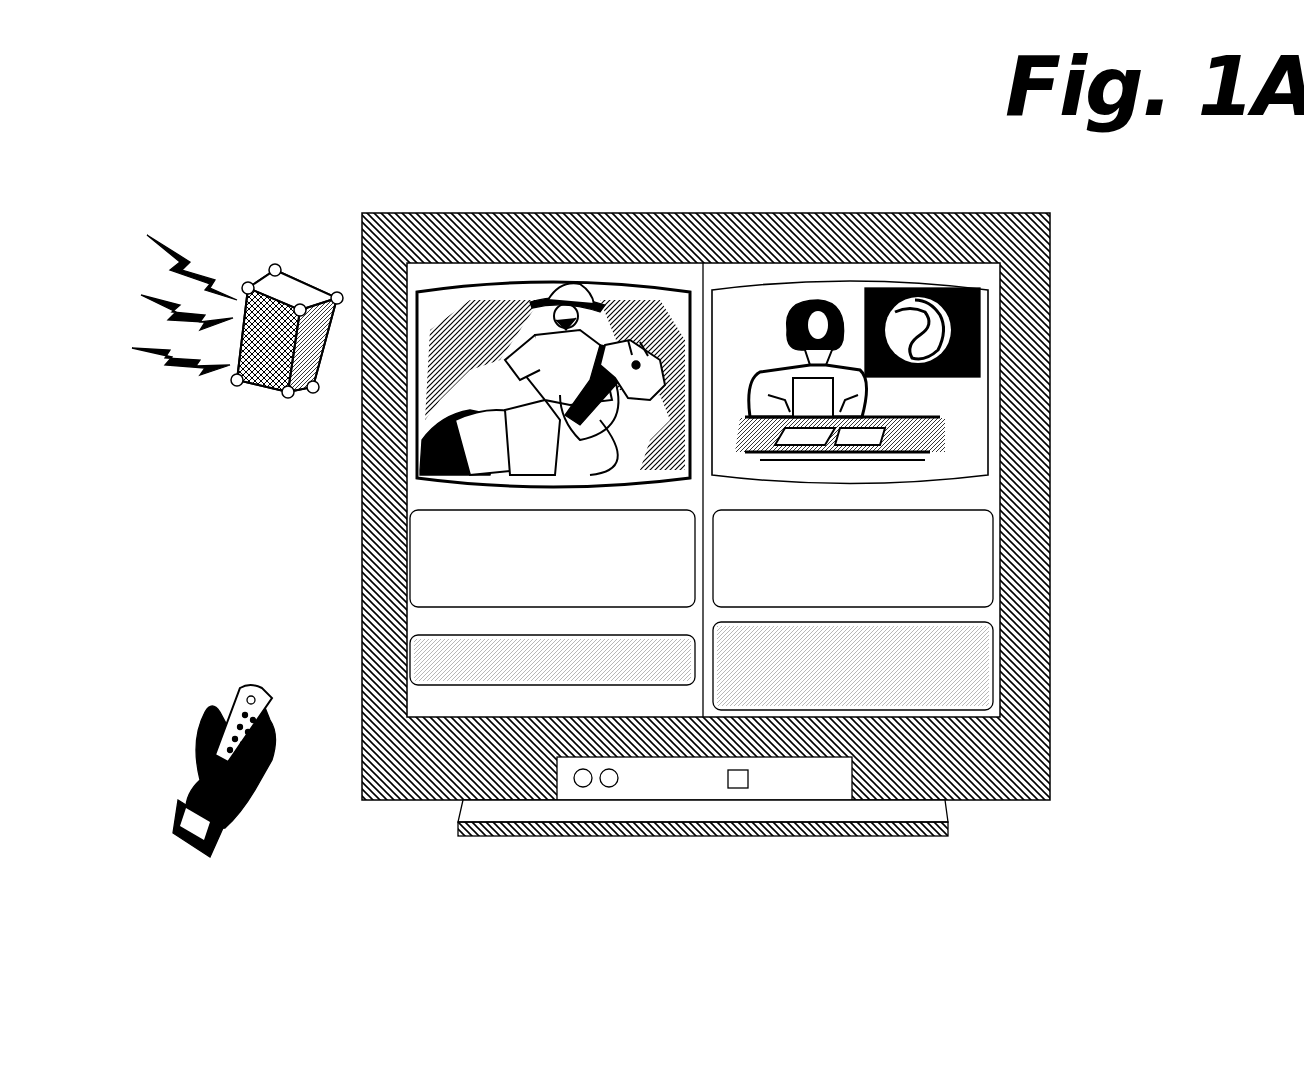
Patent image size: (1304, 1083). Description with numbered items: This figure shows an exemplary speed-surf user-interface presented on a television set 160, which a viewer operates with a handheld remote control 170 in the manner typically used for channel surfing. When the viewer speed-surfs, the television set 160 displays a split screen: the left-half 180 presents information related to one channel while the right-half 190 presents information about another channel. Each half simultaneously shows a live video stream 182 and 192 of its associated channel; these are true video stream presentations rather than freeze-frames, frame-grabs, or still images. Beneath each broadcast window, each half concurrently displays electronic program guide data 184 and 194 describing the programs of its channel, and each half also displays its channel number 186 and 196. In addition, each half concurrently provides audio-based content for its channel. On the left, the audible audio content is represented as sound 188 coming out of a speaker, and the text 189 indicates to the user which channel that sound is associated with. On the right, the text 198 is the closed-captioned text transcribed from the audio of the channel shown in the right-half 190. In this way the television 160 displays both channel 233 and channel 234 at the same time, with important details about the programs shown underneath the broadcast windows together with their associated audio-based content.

The television set 160 is at (1000, 798).
The remote control 170 is at (262, 690).
The left-half 180 is at (415, 707).
The video stream 182 is at (425, 390).
The electronic program guide data 184 is at (442, 528).
The channel number 186 is at (417, 292).
The audio-based content 188 is at (210, 368).
The text 189 is at (432, 650).
The right-half 190 is at (997, 690).
The video stream 192 is at (987, 335).
The electronic program guide data 194 is at (985, 553).
The channel number 196 is at (777, 310).
The closed-captioned text 198 is at (980, 665).
The channel 233 is at (419, 287).
The channel 234 is at (762, 318).